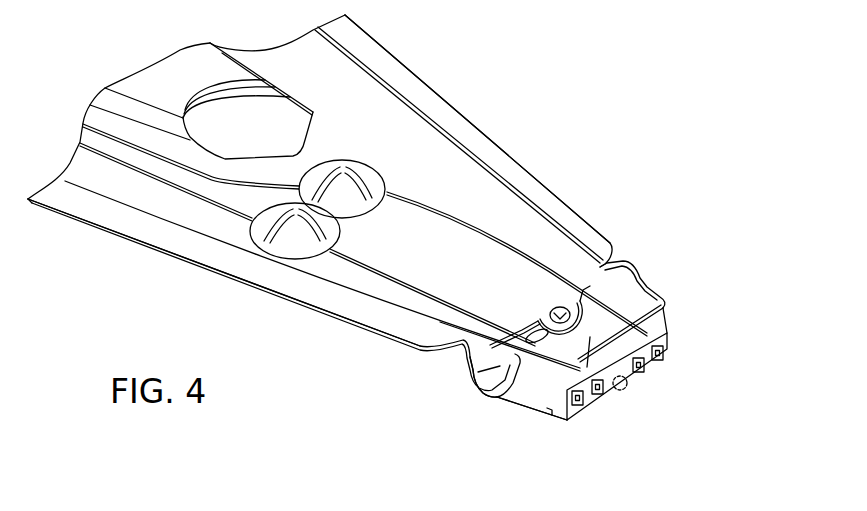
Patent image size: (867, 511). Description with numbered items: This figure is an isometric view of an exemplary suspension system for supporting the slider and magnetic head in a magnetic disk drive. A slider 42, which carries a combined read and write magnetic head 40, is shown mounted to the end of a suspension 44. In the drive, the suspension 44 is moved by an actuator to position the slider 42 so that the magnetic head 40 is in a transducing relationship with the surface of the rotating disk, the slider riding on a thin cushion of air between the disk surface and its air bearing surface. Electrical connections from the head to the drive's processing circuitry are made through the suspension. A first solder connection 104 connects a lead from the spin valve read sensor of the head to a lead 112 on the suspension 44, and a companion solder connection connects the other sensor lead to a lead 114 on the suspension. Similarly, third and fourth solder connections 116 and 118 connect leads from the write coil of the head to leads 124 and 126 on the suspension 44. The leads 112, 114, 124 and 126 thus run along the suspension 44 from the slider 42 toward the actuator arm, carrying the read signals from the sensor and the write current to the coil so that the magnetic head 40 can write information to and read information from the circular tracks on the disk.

The suspension 44 is at (346, 217).
The lead on the suspension 114 is at (535, 254).
The lead on the suspension 112 is at (355, 283).
The lead on the suspension 124 is at (407, 282).
The lead on the suspension 126 is at (460, 220).
The slider 42 is at (584, 385).
The first solder connection 104 is at (563, 414).
The third solder connection 116 is at (590, 405).
The fourth solder connection 118 is at (643, 368).
The magnetic head 40 is at (625, 392).